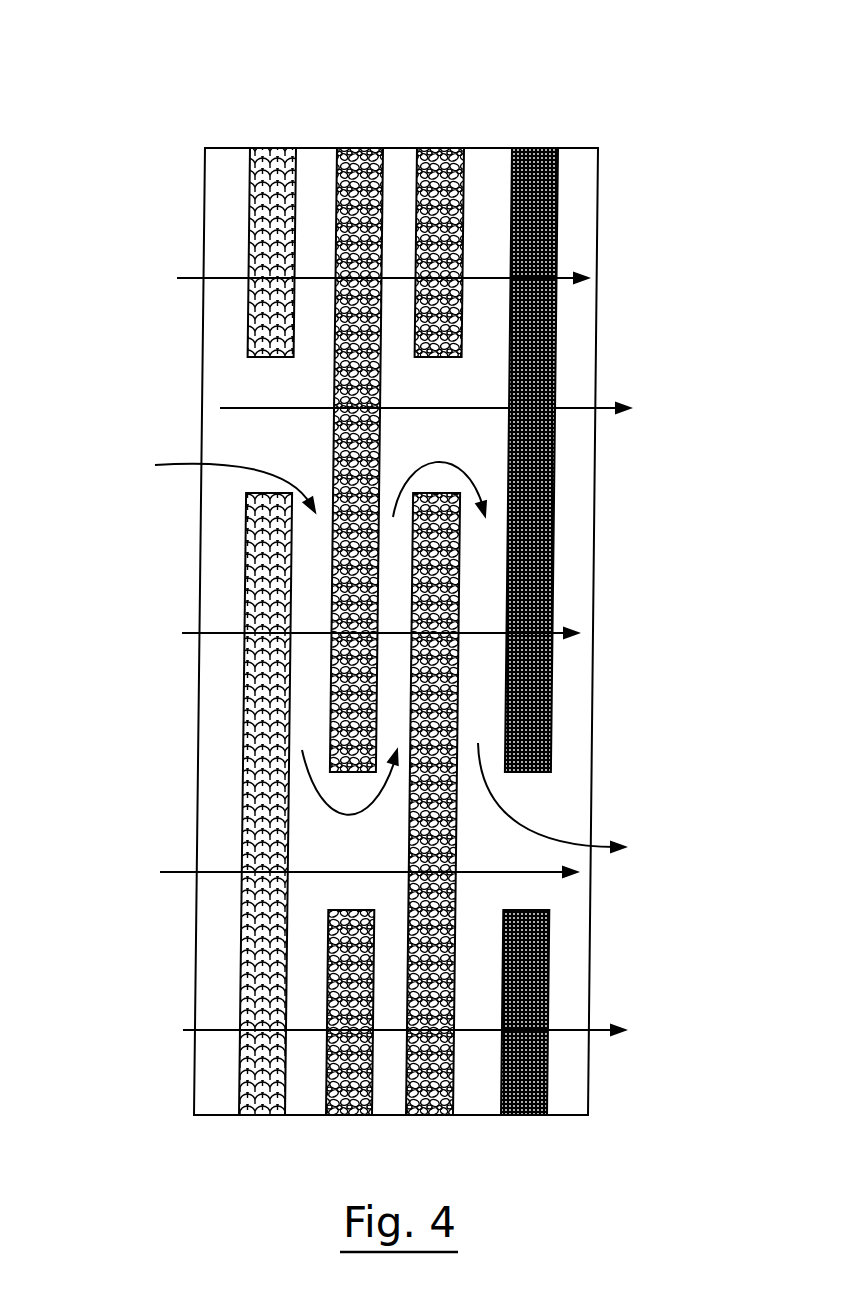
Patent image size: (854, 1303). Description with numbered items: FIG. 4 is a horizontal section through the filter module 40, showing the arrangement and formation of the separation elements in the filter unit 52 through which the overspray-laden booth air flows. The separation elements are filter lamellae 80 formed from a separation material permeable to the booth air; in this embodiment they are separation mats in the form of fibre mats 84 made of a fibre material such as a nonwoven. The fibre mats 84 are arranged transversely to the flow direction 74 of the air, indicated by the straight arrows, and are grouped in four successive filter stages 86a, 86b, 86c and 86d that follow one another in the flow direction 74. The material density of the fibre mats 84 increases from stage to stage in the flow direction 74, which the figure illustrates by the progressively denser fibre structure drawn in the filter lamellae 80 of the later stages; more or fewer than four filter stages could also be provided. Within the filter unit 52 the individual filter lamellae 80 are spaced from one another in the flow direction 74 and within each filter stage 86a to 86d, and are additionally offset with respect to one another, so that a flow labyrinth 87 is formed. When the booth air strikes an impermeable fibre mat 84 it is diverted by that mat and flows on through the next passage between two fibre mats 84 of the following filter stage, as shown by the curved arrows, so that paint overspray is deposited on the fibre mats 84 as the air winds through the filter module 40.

The filter module 40 is at (632, 127).
The filter unit 52 is at (637, 470).
The flow direction 74 is at (182, 633).
The filter lamellae 80 is at (555, 200).
The fibre mats 84 is at (270, 240).
The first filter stage 86a is at (270, 140).
The second filter stage 86b is at (365, 140).
The third filter stage 86c is at (448, 140).
The fourth filter stage 86d is at (540, 140).
The flow labyrinth 87 is at (232, 428).